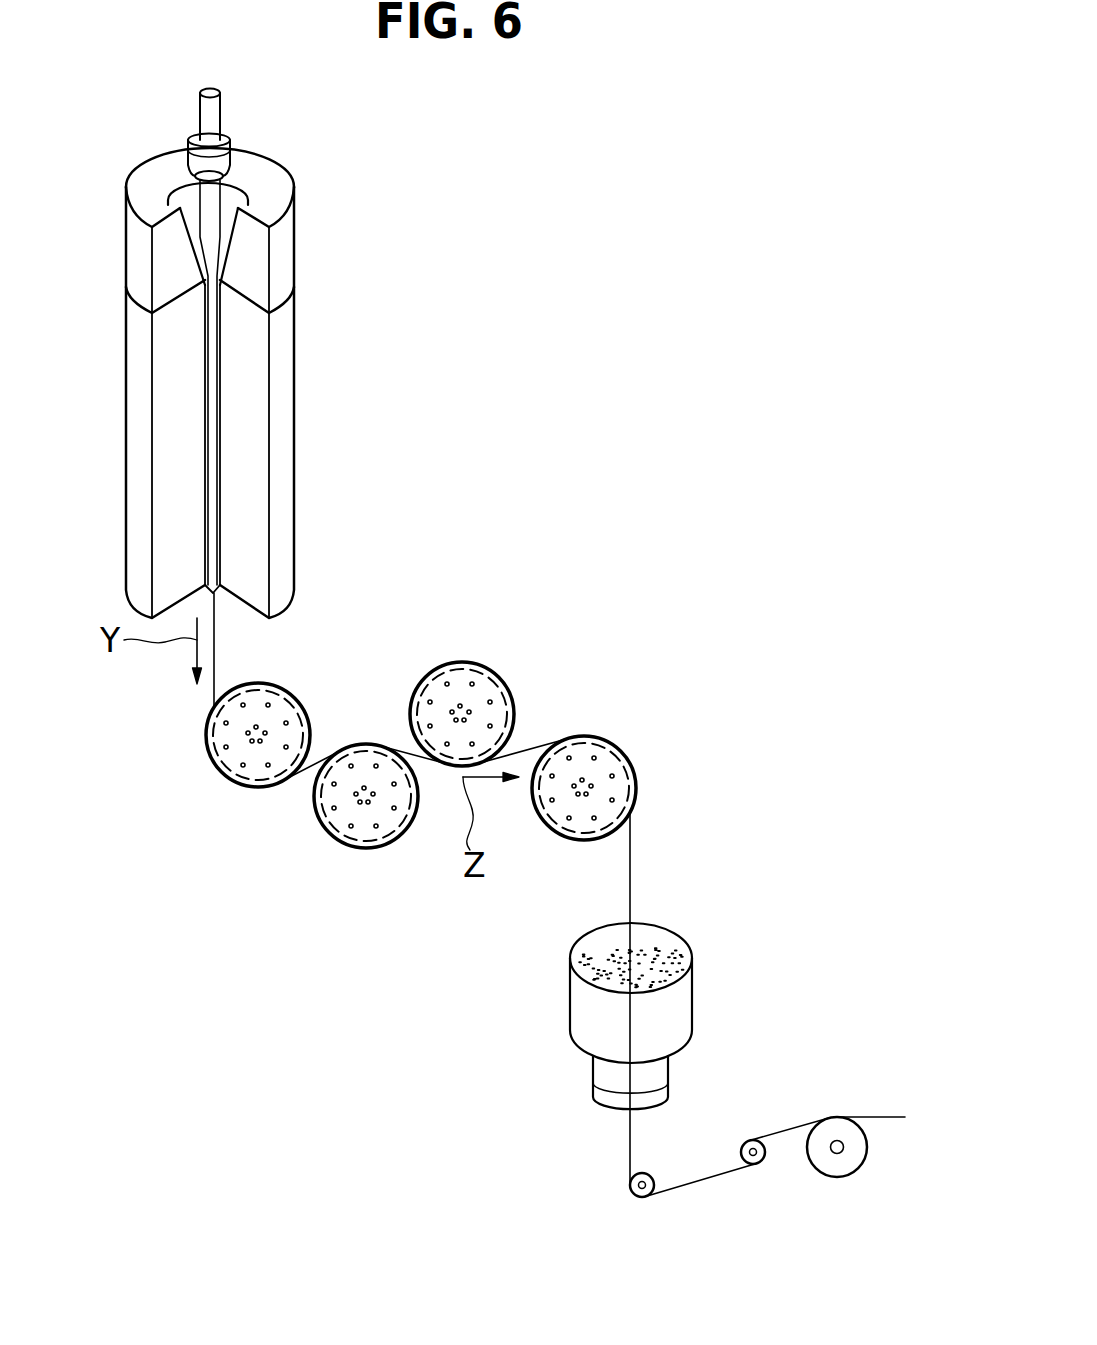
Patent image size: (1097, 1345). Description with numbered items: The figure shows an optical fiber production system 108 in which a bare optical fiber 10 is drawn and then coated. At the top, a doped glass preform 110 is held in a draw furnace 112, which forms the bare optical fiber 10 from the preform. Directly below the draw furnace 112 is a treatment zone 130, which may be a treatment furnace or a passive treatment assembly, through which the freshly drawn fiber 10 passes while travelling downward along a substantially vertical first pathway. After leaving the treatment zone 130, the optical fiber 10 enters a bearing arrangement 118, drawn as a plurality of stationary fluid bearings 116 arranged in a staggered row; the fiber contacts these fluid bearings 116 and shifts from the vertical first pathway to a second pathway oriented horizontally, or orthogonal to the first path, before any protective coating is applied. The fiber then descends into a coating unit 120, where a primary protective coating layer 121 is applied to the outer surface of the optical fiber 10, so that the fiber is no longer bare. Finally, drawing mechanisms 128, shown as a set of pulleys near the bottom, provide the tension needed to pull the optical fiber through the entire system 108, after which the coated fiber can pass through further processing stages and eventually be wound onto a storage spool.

The optical fiber 10 is at (215, 660).
The system for producing optical fibers 108 is at (518, 472).
The doped glass preform 110 is at (215, 196).
The draw furnace 112 is at (296, 196).
The stationary fluid bearing 116 is at (255, 783).
The roller assembly 118 is at (400, 632).
The coating unit 120 is at (692, 998).
The primary protective coating layer 121 is at (633, 1148).
The drawing mechanisms 128 is at (756, 1140).
The treatment zone 130 is at (289, 400).